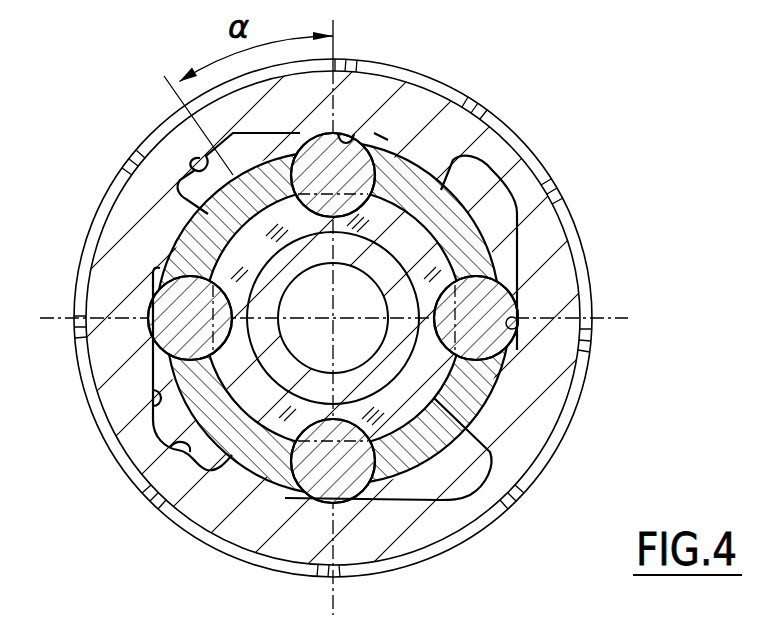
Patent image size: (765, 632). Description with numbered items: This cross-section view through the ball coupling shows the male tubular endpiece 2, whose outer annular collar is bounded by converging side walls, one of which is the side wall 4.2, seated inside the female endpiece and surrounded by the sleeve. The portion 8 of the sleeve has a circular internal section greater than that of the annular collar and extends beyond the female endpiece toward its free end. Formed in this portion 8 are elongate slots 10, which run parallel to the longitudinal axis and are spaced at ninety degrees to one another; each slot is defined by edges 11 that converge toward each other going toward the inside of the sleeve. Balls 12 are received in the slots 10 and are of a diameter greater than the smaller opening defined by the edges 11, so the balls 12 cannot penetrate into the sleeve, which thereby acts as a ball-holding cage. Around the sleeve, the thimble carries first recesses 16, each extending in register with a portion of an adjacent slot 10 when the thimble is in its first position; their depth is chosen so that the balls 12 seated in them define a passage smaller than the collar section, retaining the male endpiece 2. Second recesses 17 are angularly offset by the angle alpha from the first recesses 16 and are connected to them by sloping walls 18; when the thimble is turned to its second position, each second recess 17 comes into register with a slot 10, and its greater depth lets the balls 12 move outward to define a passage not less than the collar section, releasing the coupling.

The male tubular endpiece 2 is at (517, 193).
The converging side wall 4.2 is at (392, 287).
The portion of the sleeve 8 is at (498, 420).
The elongate slots 10 is at (500, 262).
The edges 11 is at (272, 485).
The balls 12 is at (150, 300).
The first recesses 16 is at (357, 130).
The second recesses 17 is at (185, 168).
The sloping walls 18 is at (156, 400).